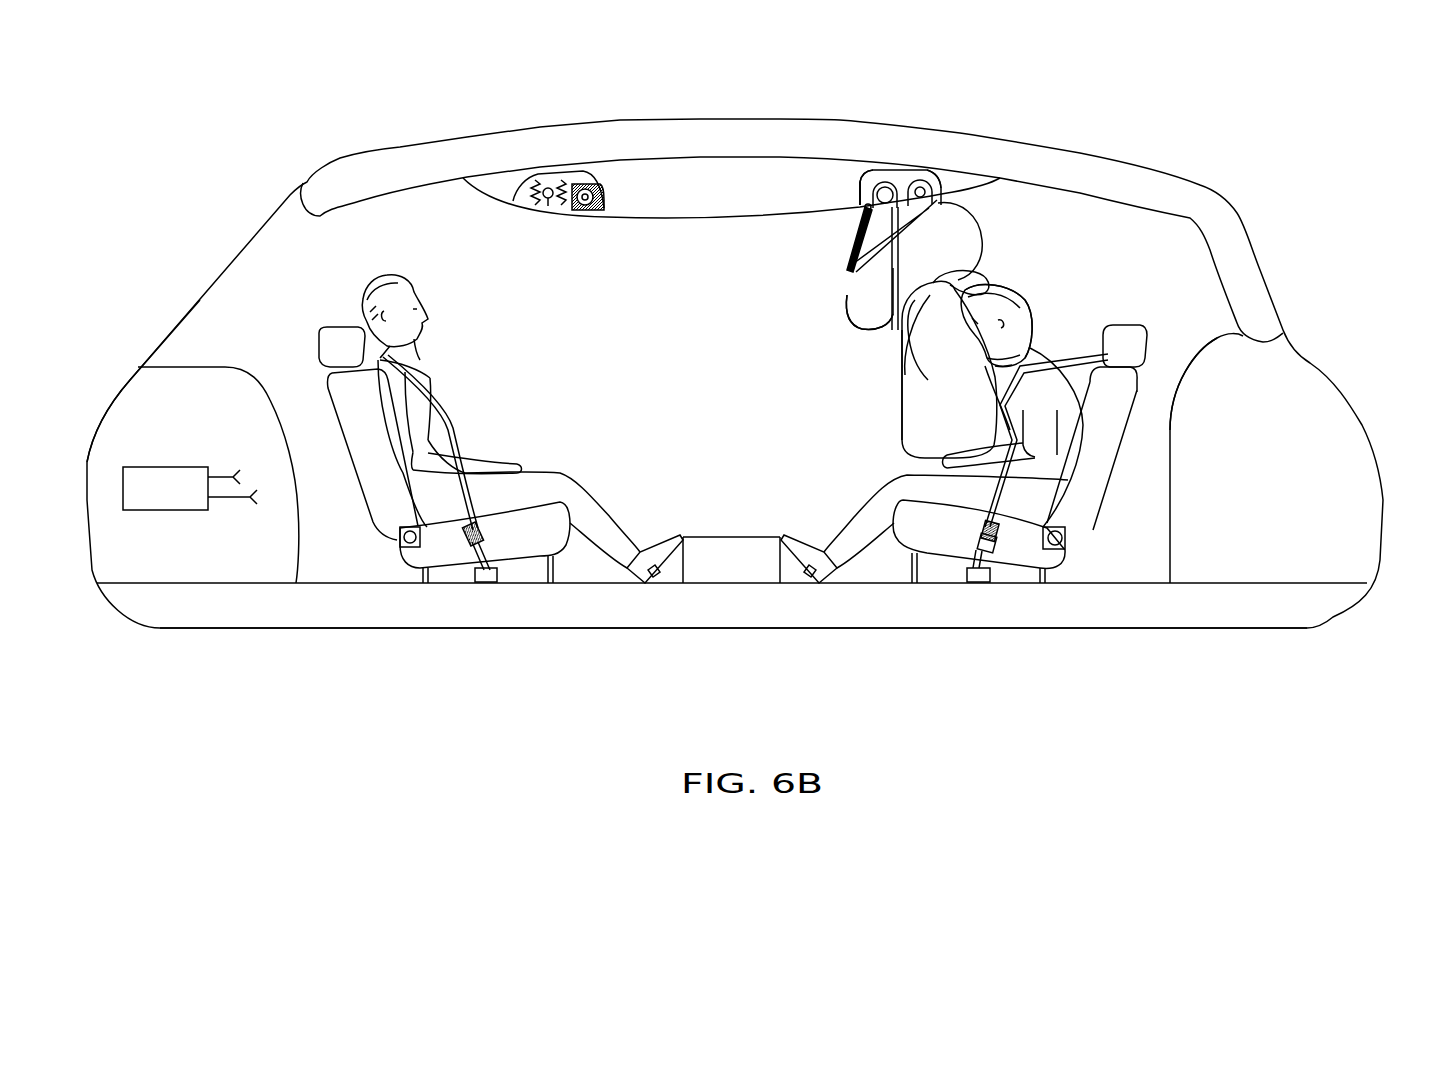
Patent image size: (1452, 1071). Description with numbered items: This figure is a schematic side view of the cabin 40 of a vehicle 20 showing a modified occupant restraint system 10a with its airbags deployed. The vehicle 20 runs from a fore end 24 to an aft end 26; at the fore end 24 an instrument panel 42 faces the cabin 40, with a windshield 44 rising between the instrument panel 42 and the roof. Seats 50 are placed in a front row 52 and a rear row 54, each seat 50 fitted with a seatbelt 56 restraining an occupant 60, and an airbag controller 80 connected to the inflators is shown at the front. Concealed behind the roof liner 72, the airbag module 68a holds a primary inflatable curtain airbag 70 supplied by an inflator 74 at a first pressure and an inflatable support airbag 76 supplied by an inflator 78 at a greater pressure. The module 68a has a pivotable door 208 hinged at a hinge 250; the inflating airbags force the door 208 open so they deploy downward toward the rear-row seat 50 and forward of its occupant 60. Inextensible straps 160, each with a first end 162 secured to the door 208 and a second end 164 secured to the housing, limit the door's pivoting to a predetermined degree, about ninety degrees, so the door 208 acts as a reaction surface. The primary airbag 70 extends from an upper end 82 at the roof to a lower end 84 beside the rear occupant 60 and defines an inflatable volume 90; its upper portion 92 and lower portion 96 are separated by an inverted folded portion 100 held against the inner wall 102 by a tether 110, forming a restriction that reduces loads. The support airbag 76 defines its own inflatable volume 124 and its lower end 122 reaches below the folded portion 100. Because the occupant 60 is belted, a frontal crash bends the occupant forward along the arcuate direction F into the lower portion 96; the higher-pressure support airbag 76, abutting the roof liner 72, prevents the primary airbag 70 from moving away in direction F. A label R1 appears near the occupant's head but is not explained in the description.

The vehicle 20 is at (1345, 500).
The first or fore end 24 is at (157, 308).
The second or aft end 26 is at (1318, 312).
The passenger compartment or cabin 40 is at (651, 378).
The instrument panel 42 is at (243, 372).
The windshield or windscreen 44 is at (222, 270).
The seat 50 is at (385, 522).
The front row 52 is at (470, 634).
The rear row 54 is at (977, 634).
The seatbelt 56 is at (448, 445).
The occupant 60 is at (430, 408).
The airbag module 68a is at (570, 165).
The primary inflatable curtain airbag 70 is at (515, 200).
The roof liner 72 is at (730, 218).
The inflator 74 is at (548, 200).
The inflatable support airbag 76 is at (605, 185).
The inflator 78 is at (585, 206).
The airbag controller 80 is at (168, 478).
The upper end 82 is at (928, 172).
The lower end 84 is at (895, 456).
The inflatable volume 90 is at (912, 408).
The upper portion 92 is at (975, 245).
The lower portion 96 is at (905, 375).
The folded portion 100 is at (978, 278).
The inner wall 102 is at (868, 200).
The tether 110 is at (982, 292).
The lower end 122 is at (845, 342).
The inflatable volume 124 is at (877, 268).
The inextensible tether or strap 160 is at (922, 220).
The first end 162 is at (939, 351).
The second end 164 is at (937, 208).
The pivotable door 208 is at (848, 257).
The hinge 250 is at (865, 205).
The occupant restraint system 10a is at (855, 163).
The direction F is at (1172, 385).
The radius R1 is at (1000, 290).